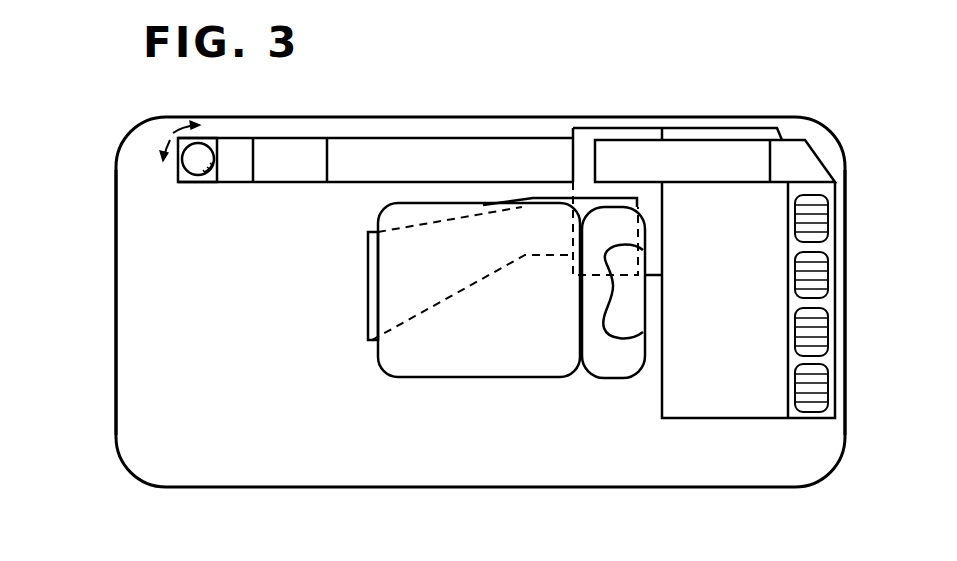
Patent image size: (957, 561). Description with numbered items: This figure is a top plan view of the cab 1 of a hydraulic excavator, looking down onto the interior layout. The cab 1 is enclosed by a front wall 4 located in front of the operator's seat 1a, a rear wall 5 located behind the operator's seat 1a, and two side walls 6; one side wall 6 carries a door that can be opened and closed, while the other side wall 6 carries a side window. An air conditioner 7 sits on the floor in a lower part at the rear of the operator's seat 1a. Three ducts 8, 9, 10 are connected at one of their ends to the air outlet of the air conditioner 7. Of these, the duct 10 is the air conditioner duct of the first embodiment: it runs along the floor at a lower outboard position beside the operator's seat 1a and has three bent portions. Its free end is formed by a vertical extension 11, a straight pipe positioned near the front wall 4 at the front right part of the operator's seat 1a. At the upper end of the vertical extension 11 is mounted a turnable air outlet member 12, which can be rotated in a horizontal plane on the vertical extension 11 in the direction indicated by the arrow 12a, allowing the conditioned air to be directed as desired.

The cab 1 is at (244, 487).
The operator's seat 1a is at (547, 380).
The front wall 4 is at (116, 350).
The rear wall 5 is at (846, 290).
The side walls 6 is at (382, 129).
The air conditioner 7 is at (753, 419).
The duct 8 is at (365, 312).
The duct 9 is at (695, 140).
The duct 10 is at (280, 145).
The vertical extension 11 is at (178, 181).
The air outlet member 12 is at (203, 153).
The arrow 12a is at (175, 137).